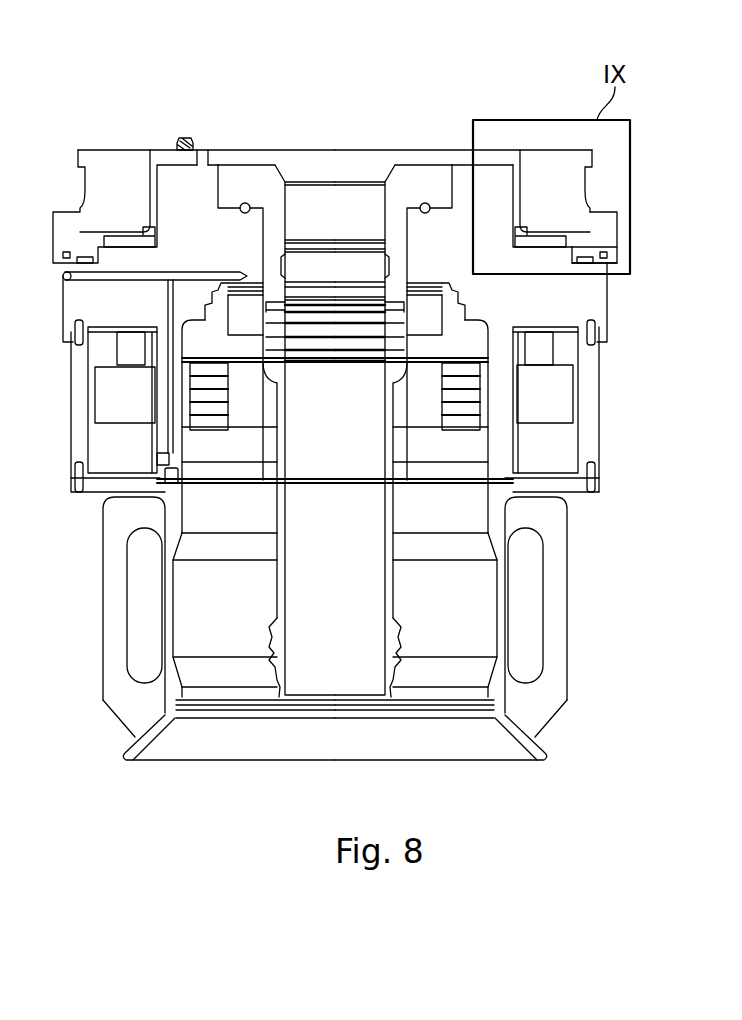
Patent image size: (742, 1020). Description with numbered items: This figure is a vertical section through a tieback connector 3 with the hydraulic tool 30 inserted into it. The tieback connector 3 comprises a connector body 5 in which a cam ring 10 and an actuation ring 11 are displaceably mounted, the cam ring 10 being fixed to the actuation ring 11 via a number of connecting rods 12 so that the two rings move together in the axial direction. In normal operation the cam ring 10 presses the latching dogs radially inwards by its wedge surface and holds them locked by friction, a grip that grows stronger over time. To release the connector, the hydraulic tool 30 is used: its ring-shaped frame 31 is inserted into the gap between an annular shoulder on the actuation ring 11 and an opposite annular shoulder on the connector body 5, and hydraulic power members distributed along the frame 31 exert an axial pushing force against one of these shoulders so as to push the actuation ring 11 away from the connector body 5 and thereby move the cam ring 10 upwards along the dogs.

The actuation ring 11 is at (542, 150).
The hydraulic tool 30 is at (610, 203).
The ring-shaped frame 31 is at (605, 228).
The connector body 5 is at (593, 303).
The connecting rods 12 is at (540, 348).
The cam ring 10 is at (558, 405).
The tieback connector 3 is at (612, 450).